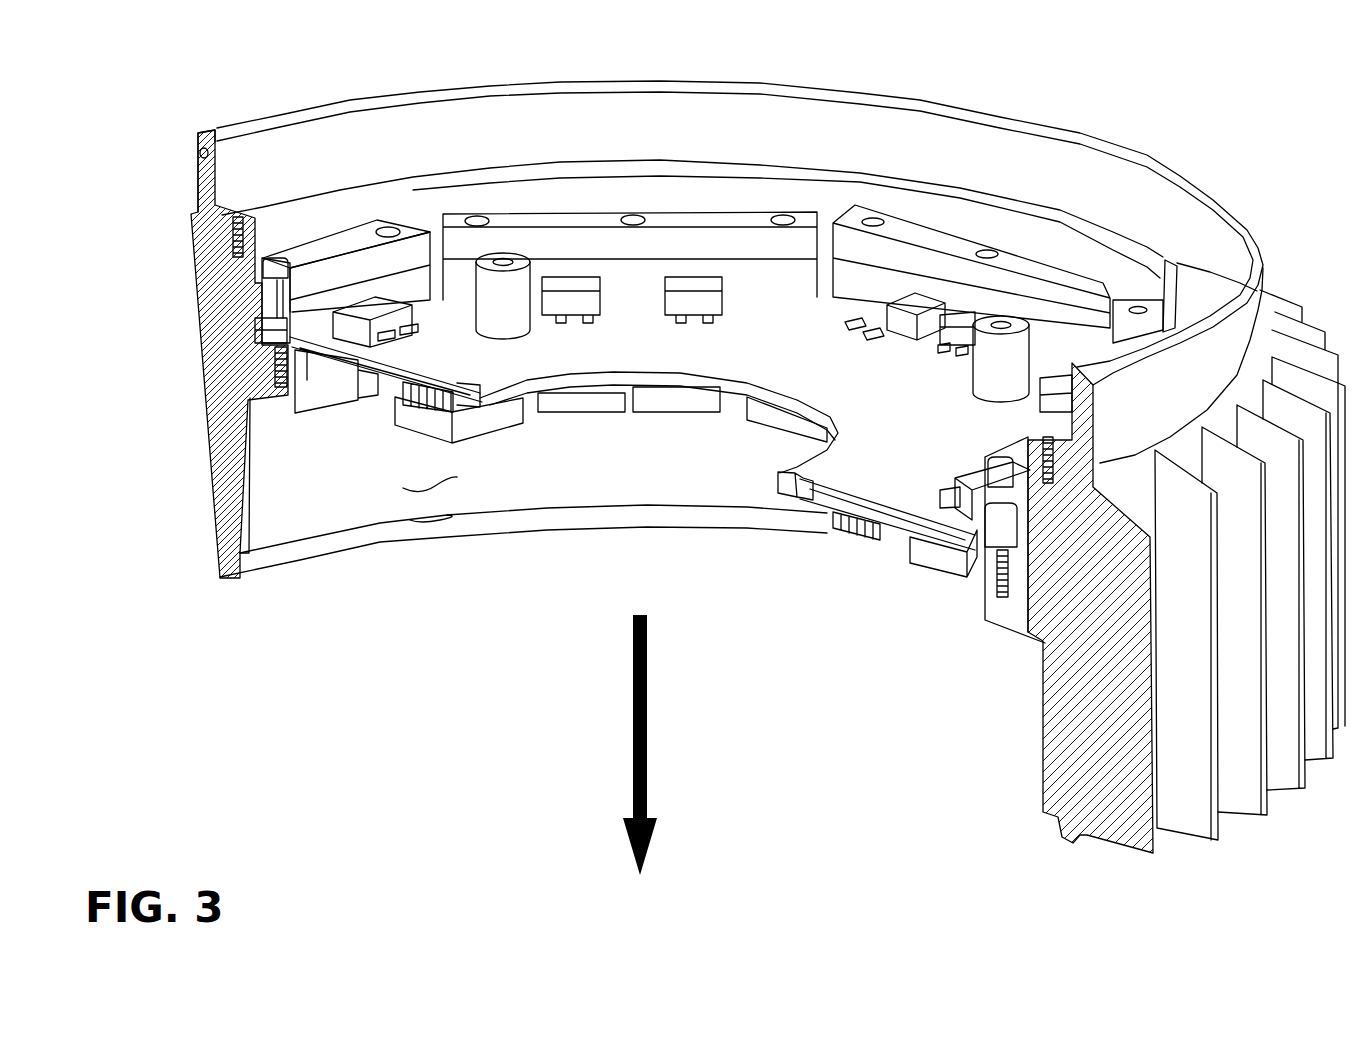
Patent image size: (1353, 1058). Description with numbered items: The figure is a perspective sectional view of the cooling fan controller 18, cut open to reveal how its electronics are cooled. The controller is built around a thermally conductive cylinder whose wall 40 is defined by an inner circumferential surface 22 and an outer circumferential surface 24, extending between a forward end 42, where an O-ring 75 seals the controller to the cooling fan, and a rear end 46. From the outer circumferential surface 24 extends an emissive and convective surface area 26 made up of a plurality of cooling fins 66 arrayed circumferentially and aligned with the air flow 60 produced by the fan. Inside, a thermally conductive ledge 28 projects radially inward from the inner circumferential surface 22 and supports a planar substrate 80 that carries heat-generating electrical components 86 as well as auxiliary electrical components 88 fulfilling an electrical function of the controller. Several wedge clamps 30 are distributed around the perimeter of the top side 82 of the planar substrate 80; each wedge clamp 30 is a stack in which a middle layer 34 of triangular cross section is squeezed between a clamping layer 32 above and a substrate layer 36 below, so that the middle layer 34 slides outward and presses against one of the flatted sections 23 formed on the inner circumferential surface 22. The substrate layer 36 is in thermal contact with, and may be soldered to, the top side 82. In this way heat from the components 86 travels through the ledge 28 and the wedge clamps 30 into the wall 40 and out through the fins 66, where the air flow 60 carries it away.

The cooling fan controller 18 is at (378, 743).
The inner circumferential surface 22 is at (1183, 233).
The flatted sections 23 is at (392, 205).
The outer circumferential surface 24 is at (1232, 358).
The emissive and convective surface area 26 is at (1238, 630).
The thermally conductive ledge 28 is at (243, 553).
The wedge clamp 30 is at (332, 268).
The clamping layer 32 is at (254, 270).
The middle layer 34 is at (273, 296).
The substrate layer 36 is at (260, 345).
The wall 40 is at (231, 130).
The forward end 42 is at (183, 168).
The rear end 46 is at (196, 560).
The air flow 60 is at (632, 723).
The cooling fins 66 is at (1288, 750).
The O-ring 75 is at (200, 150).
The planar substrate 80 is at (527, 363).
The top side 82 is at (622, 357).
The heat-generating electrical components 86 is at (683, 282).
The auxiliary electrical components 88 is at (485, 262).